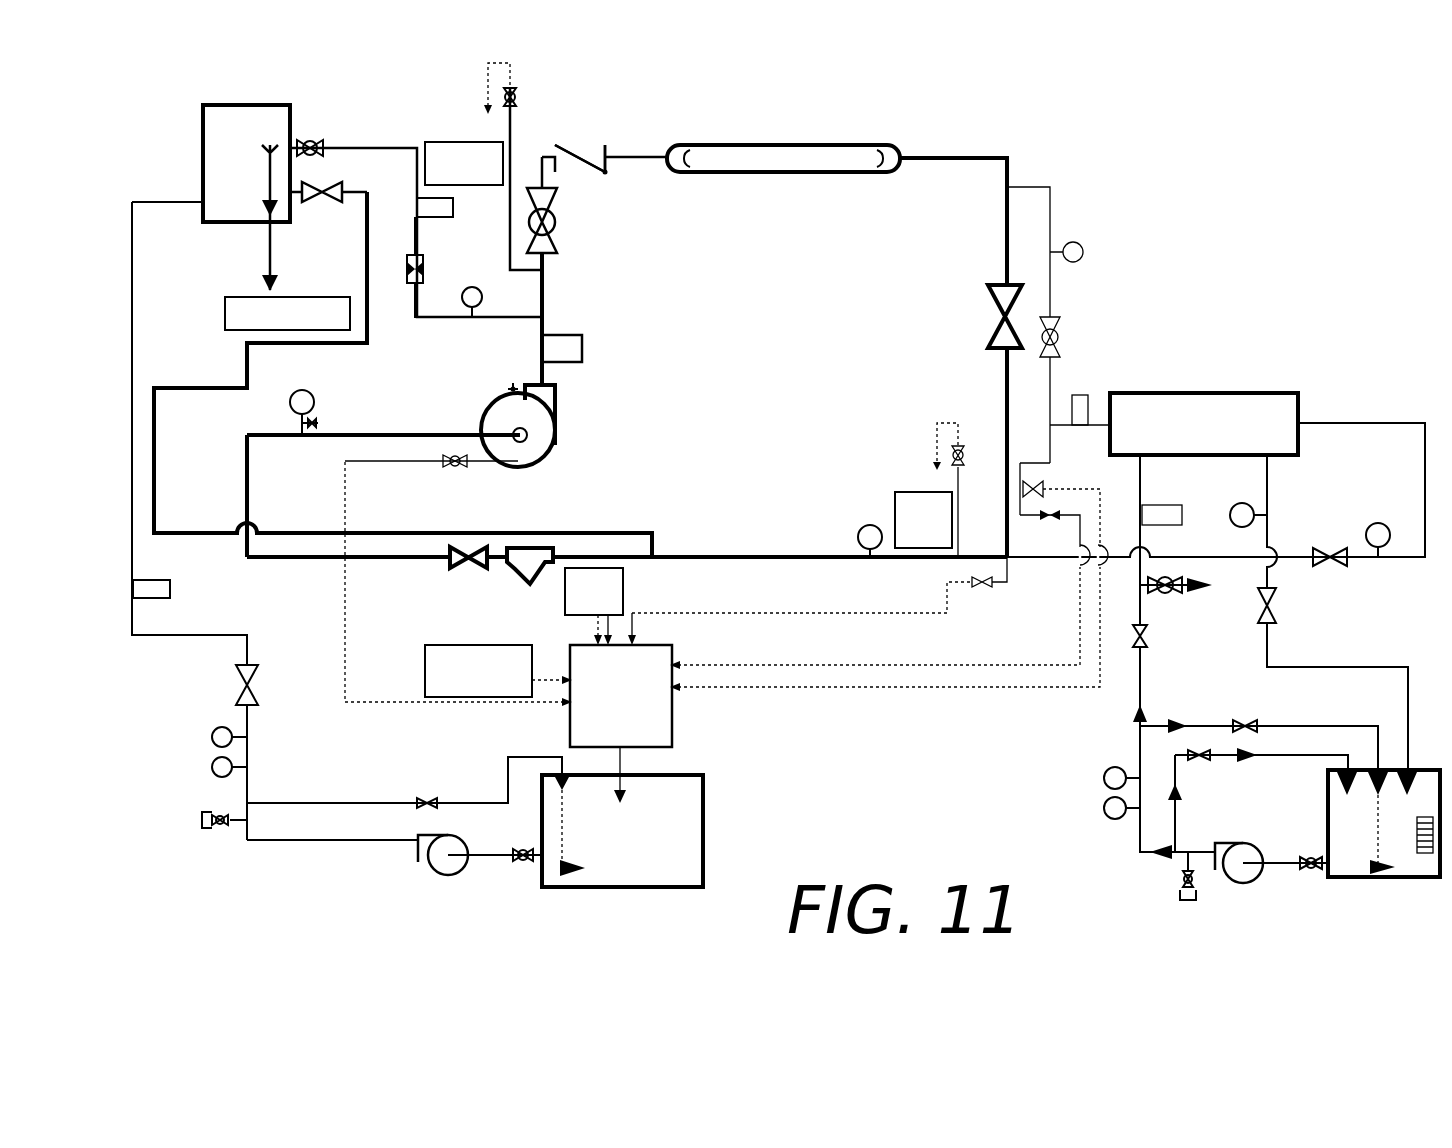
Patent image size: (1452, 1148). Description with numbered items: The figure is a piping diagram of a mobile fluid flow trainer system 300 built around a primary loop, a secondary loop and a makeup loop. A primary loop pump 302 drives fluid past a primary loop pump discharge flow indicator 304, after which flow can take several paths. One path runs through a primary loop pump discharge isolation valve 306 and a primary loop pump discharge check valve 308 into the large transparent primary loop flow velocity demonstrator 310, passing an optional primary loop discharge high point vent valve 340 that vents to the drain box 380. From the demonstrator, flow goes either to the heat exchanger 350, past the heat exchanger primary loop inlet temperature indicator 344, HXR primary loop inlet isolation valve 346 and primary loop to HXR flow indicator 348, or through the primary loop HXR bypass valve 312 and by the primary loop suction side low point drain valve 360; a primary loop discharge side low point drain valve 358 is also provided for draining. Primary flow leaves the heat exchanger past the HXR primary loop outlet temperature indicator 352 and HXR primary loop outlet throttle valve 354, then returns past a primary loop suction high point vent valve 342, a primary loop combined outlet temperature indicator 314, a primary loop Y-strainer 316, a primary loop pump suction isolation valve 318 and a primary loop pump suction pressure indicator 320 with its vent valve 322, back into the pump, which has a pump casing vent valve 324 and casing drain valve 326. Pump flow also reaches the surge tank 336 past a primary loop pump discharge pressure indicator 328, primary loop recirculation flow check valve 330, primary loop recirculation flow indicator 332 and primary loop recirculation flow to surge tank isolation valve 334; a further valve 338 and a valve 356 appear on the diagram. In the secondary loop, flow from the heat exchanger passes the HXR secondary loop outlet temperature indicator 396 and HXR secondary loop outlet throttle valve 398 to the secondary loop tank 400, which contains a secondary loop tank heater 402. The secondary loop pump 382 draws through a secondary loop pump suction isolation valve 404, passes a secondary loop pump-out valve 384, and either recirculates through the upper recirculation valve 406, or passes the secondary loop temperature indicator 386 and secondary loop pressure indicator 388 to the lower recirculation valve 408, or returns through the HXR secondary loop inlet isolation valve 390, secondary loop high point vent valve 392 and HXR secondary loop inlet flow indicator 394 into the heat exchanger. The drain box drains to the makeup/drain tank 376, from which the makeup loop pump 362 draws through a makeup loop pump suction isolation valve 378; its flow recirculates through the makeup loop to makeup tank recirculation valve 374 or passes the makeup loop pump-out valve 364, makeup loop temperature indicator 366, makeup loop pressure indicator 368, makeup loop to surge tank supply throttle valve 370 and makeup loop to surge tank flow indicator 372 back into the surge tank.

The mobile fluid flow trainer system 300 is at (1258, 172).
The primary loop pump 302 is at (525, 470).
The primary loop pump discharge flow indicator 304 is at (596, 352).
The primary loop pump discharge isolation valve 306 is at (562, 222).
The primary loop pump discharge check valve 308 is at (615, 172).
The primary loop flow velocity demonstrator 310 is at (785, 140).
The primary loop HXR bypass valve 312 is at (987, 312).
The primary loop combined outlet temperature indicator 314 is at (870, 522).
The primary loop Y-strainer 316 is at (523, 590).
The primary loop pump suction isolation valve 318 is at (465, 573).
The primary loop pump suction pressure indicator 320 is at (313, 392).
The vent valve 322 is at (322, 423).
The pump casing vent valve 324 is at (502, 388).
The casing drain valve 326 is at (455, 470).
The primary loop pump discharge pressure indicator 328 is at (476, 322).
The primary loop recirculation flow check valve 330 is at (428, 268).
The primary loop recirculation flow indicator 332 is at (453, 204).
The primary loop recirculation flow to surge tank isolation valve 334 is at (322, 137).
The surge tank 336 is at (248, 100).
The valve 338 is at (325, 208).
The primary loop discharge high point vent valve 340 is at (522, 98).
The primary loop suction high point vent valve 342 is at (966, 440).
The heat exchanger primary loop inlet temperature indicator 344 is at (1088, 238).
The HXR primary loop inlet isolation valve 346 is at (1066, 332).
The primary loop to HXR flow indicator 348 is at (1089, 392).
The heat exchanger 350 is at (1300, 391).
The HXR primary loop outlet temperature indicator 352 is at (1380, 520).
The HXR primary loop outlet throttle valve 354 is at (1335, 545).
The three-way valve 356 is at (1046, 490).
The primary loop discharge side low point drain valve 358 is at (1020, 517).
The primary loop suction side low point drain valve 360 is at (982, 594).
The makeup loop pump 362 is at (446, 880).
The makeup loop pump-out valve 364 is at (220, 833).
The makeup loop temperature indicator 366 is at (210, 767).
The makeup loop pressure indicator 368 is at (210, 737).
The makeup loop to surge tank supply throttle valve 370 is at (234, 687).
The makeup loop to surge tank flow indicator 372 is at (176, 588).
The makeup loop to makeup tank recirculation valve 374 is at (425, 796).
The makeup/drain tank 376 is at (632, 890).
The makeup loop pump suction isolation valve 378 is at (523, 868).
The drain box 380 is at (678, 720).
The secondary loop pump 382 is at (1243, 888).
The secondary loop pump-out valve 384 is at (1190, 904).
The secondary loop temperature indicator 386 is at (1100, 808).
The secondary loop pressure indicator 388 is at (1100, 777).
The HXR secondary loop inlet isolation valve 390 is at (1152, 633).
The secondary loop high point vent valve 392 is at (1188, 596).
The HXR secondary loop inlet flow indicator 394 is at (1178, 505).
The HXR secondary loop outlet temperature indicator 396 is at (1233, 524).
The HXR secondary loop outlet throttle valve 398 is at (1282, 605).
The secondary loop tank 400 is at (1324, 797).
The secondary loop tank heater 402 is at (1427, 860).
The secondary loop pump suction isolation valve 404 is at (1311, 874).
The secondary loop pump to secondary loop tank upper recirculation valve 406 is at (1199, 766).
The secondary loop pump to secondary loop tank lower recirculation valve 408 is at (1245, 716).